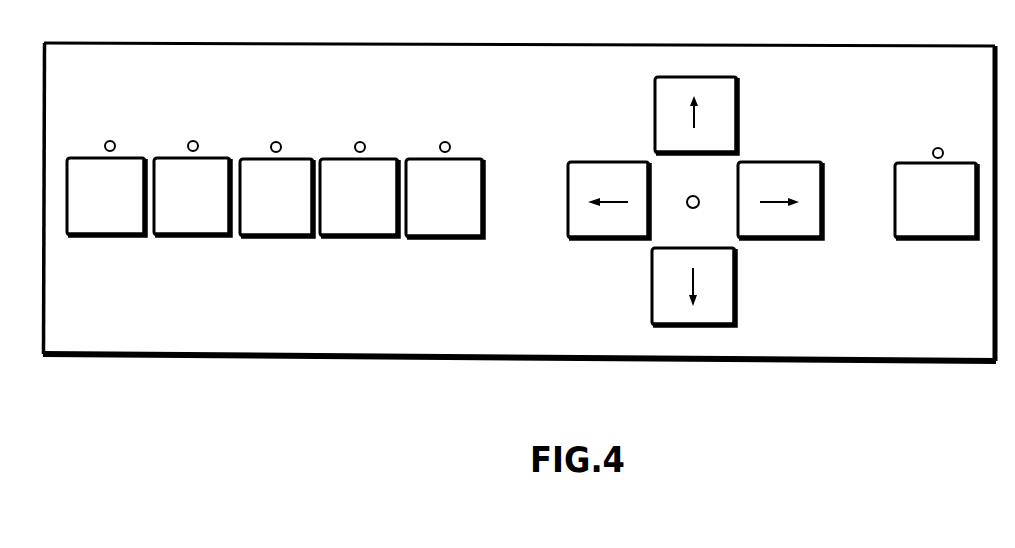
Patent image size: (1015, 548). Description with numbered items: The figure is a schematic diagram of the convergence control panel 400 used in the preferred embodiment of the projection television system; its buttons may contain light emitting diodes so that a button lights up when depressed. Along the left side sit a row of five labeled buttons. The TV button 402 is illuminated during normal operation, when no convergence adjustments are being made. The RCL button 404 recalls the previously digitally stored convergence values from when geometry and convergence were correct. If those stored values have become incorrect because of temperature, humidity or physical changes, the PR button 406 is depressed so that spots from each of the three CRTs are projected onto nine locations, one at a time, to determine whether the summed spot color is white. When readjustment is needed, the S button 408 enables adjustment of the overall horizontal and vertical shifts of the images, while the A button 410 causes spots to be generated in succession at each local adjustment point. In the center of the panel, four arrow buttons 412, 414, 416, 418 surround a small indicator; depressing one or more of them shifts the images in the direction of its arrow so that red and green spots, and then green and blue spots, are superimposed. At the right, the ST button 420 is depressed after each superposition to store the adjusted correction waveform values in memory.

The convergence control panel 400 is at (610, 25).
The TV button 402 is at (90, 236).
The RCL button 404 is at (180, 226).
The PR button 406 is at (268, 228).
The S button 408 is at (349, 228).
The A button 410 is at (430, 228).
The arrow button 412 is at (703, 87).
The arrow button 414 is at (775, 172).
The arrow button 416 is at (720, 297).
The arrow button 418 is at (617, 238).
The ST button 420 is at (933, 243).